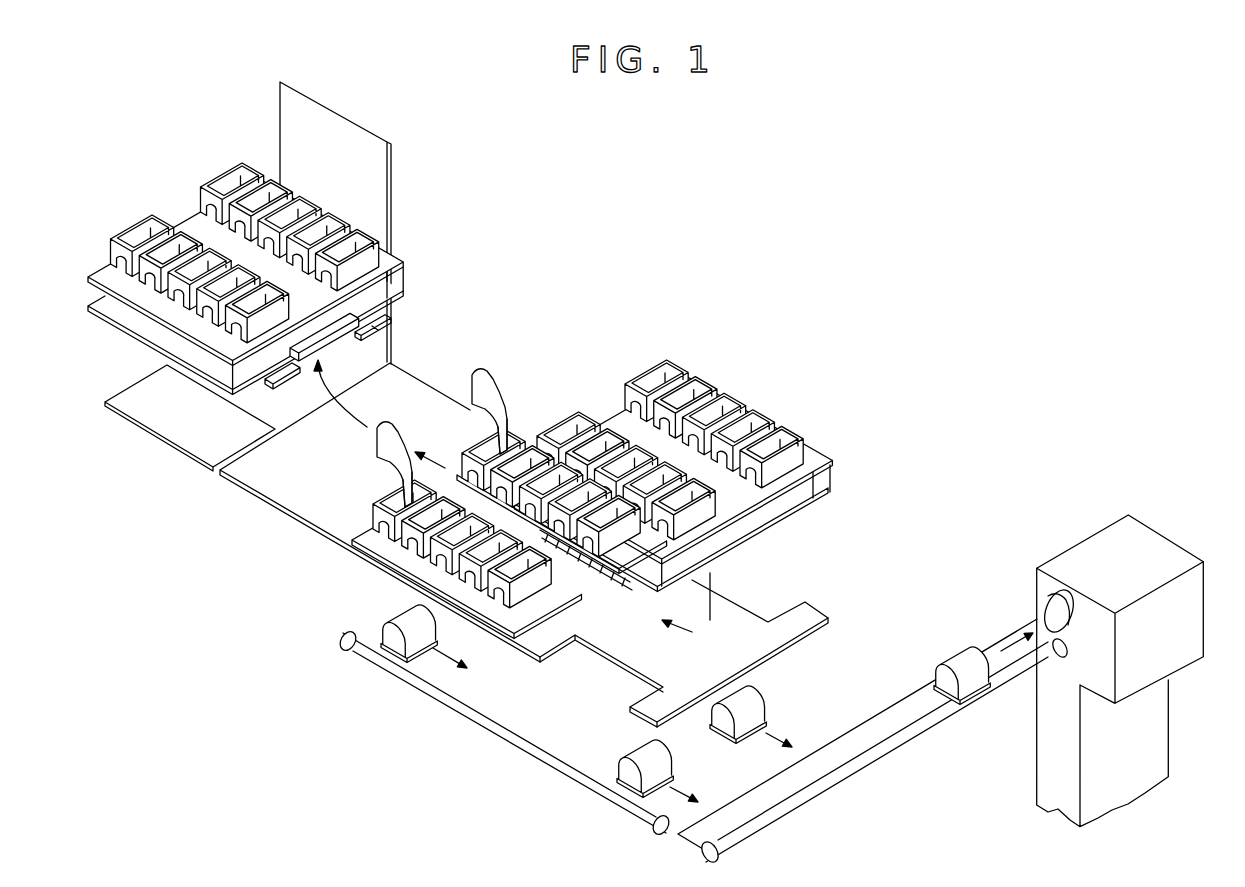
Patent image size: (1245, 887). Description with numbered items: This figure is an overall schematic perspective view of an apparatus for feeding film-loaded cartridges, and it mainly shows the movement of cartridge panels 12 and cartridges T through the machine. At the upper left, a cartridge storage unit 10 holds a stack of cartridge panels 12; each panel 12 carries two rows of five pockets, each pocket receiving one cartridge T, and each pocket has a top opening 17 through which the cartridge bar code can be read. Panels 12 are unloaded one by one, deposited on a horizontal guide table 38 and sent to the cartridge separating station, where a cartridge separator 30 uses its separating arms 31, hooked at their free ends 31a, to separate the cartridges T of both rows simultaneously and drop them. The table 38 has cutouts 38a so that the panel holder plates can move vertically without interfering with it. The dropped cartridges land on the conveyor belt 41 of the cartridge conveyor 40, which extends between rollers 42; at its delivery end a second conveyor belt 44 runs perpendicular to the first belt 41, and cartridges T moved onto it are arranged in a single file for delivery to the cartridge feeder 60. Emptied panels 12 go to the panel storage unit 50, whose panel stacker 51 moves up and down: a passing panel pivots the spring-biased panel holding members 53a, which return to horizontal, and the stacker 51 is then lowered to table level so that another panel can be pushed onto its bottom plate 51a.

The cartridge storage unit 10 is at (774, 395).
The cartridge panel 12 is at (89, 304).
The top opening 17 is at (273, 188).
The cartridge separator 30 is at (481, 458).
The separating arm 31 is at (488, 375).
The free end 31a is at (503, 416).
The horizontal guide table 38 is at (521, 545).
The cutout 38a is at (568, 645).
The cartridge conveyor 40 is at (670, 742).
The conveyor belt 41 is at (495, 708).
The roller 42 is at (342, 645).
The second conveyor belt 44 is at (838, 759).
The panel storage unit 50 is at (373, 223).
The panel stacker 51 is at (390, 187).
The bottom plate 51a is at (178, 436).
The panel holding member 53a is at (328, 340).
The cartridge feeder 60 is at (1156, 526).
The cartridge T is at (382, 643).